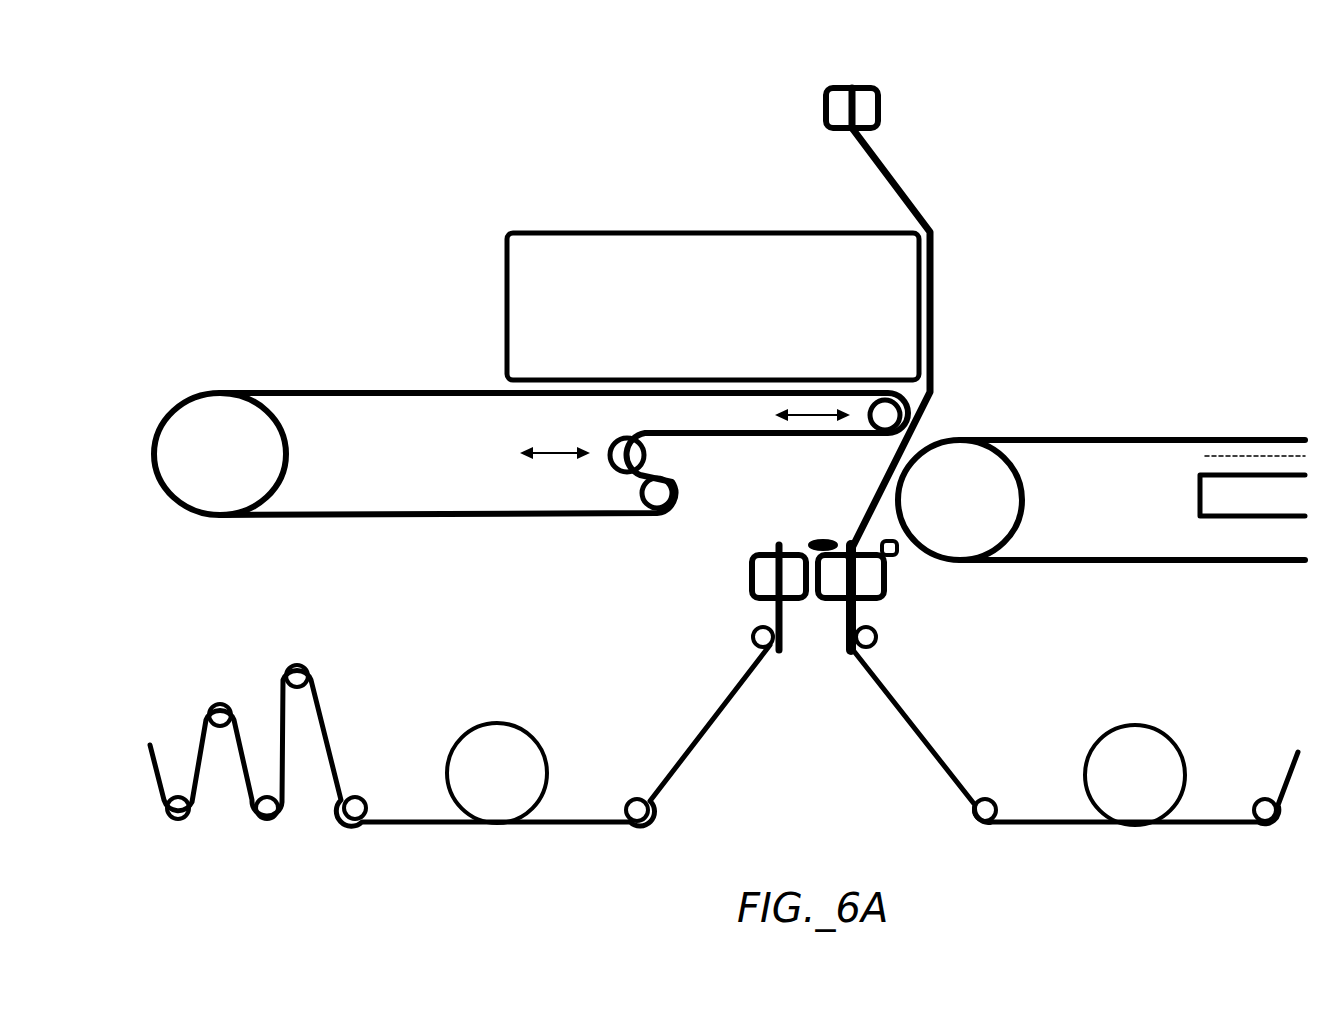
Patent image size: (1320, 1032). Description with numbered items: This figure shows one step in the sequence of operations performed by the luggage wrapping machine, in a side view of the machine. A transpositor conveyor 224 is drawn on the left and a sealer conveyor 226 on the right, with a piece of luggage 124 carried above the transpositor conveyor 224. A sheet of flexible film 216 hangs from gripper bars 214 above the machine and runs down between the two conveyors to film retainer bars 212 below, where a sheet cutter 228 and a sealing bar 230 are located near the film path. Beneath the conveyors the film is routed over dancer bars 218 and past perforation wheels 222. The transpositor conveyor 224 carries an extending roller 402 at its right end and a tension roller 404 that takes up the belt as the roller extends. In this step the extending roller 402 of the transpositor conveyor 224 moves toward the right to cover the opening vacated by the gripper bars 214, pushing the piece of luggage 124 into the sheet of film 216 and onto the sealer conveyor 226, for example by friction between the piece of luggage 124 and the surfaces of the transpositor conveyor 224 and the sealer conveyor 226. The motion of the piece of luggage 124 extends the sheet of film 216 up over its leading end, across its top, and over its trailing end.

The piece of luggage 124 is at (616, 232).
The film retainer bars 212 is at (748, 588).
The gripper bars 214 is at (826, 105).
The sheet of flexible film 216 is at (905, 187).
The dancer bars 218 is at (300, 664).
The perforation wheels 222 is at (562, 698).
The transpositor conveyor 224 is at (290, 391).
The sealer conveyor 226 is at (1124, 439).
The sheet cutter 228 is at (812, 540).
The sealing bar 230 is at (900, 562).
The extending roller 402 is at (928, 385).
The tension roller 404 is at (603, 458).